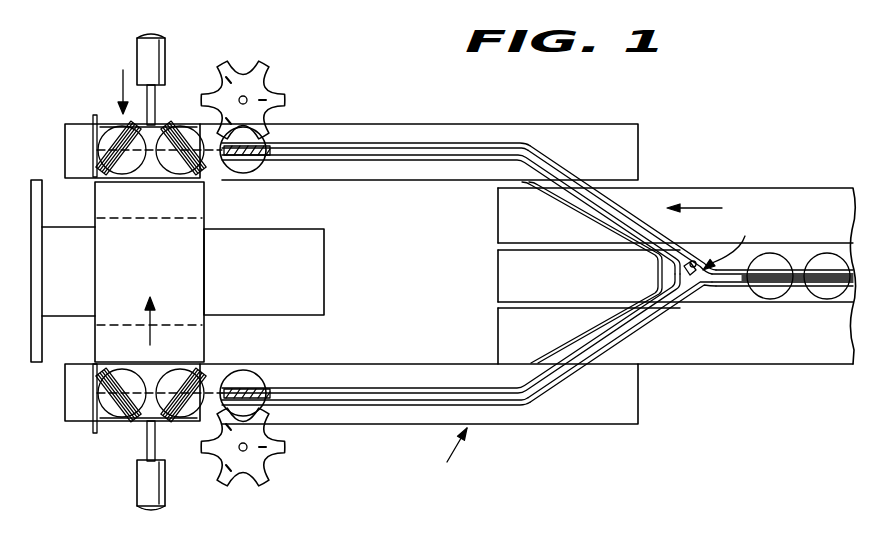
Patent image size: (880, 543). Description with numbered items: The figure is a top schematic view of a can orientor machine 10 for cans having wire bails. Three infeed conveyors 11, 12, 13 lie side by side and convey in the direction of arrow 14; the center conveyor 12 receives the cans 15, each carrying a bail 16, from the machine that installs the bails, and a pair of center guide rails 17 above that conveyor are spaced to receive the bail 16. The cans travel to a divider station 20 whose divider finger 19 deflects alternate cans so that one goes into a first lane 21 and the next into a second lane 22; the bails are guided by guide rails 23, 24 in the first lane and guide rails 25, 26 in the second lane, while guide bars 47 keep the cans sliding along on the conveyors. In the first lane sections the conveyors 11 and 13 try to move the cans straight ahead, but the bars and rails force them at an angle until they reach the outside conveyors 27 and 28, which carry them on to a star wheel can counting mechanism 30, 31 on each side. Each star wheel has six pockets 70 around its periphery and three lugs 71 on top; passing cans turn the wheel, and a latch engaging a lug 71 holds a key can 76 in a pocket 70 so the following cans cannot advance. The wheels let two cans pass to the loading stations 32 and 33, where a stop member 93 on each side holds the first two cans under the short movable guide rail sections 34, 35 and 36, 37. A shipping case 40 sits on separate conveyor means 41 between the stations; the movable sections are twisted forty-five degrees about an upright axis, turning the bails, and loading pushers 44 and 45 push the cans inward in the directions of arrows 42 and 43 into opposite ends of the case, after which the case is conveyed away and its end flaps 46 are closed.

The can orientor machine 10 is at (447, 462).
The infeed conveyor 11 is at (780, 202).
The center infeed conveyor 12 is at (728, 293).
The infeed conveyor 13 is at (750, 352).
The direction arrow 14 is at (703, 209).
The can 15 is at (770, 291).
The bail 16 is at (842, 258).
The center guide rail 17 is at (808, 256).
The divider finger 19 is at (687, 266).
The divider station 20 is at (728, 242).
The first lane 21 is at (563, 170).
The second lane 22 is at (628, 340).
The guide rail 23 is at (430, 143).
The guide rail 24 is at (430, 157).
The guide rail 25 is at (382, 388).
The guide rail 26 is at (413, 402).
The outside conveyor 27 is at (540, 132).
The outside conveyor 28 is at (577, 412).
The star wheel can counting mechanism 30 is at (262, 86).
The star wheel can counting mechanism 31 is at (260, 462).
The loading station 32 is at (117, 118).
The loading station 33 is at (122, 418).
The movable guide rail section 34 is at (174, 177).
The movable guide rail section 35 is at (133, 176).
The movable guide rail section 36 is at (180, 368).
The movable guide rail section 37 is at (79, 350).
The shipping case 40 is at (197, 272).
The case conveyor means 41 is at (253, 243).
The pusher direction arrow 42 is at (118, 88).
The pusher direction arrow 43 is at (148, 330).
The loading pusher 44 is at (166, 60).
The loading pusher 45 is at (140, 480).
The case flap 46 is at (95, 203).
The guide bar 47 is at (540, 192).
The pocket 70 is at (258, 64).
The lug 71 is at (230, 468).
The key can 76 is at (248, 382).
The stop member 93 is at (93, 132).